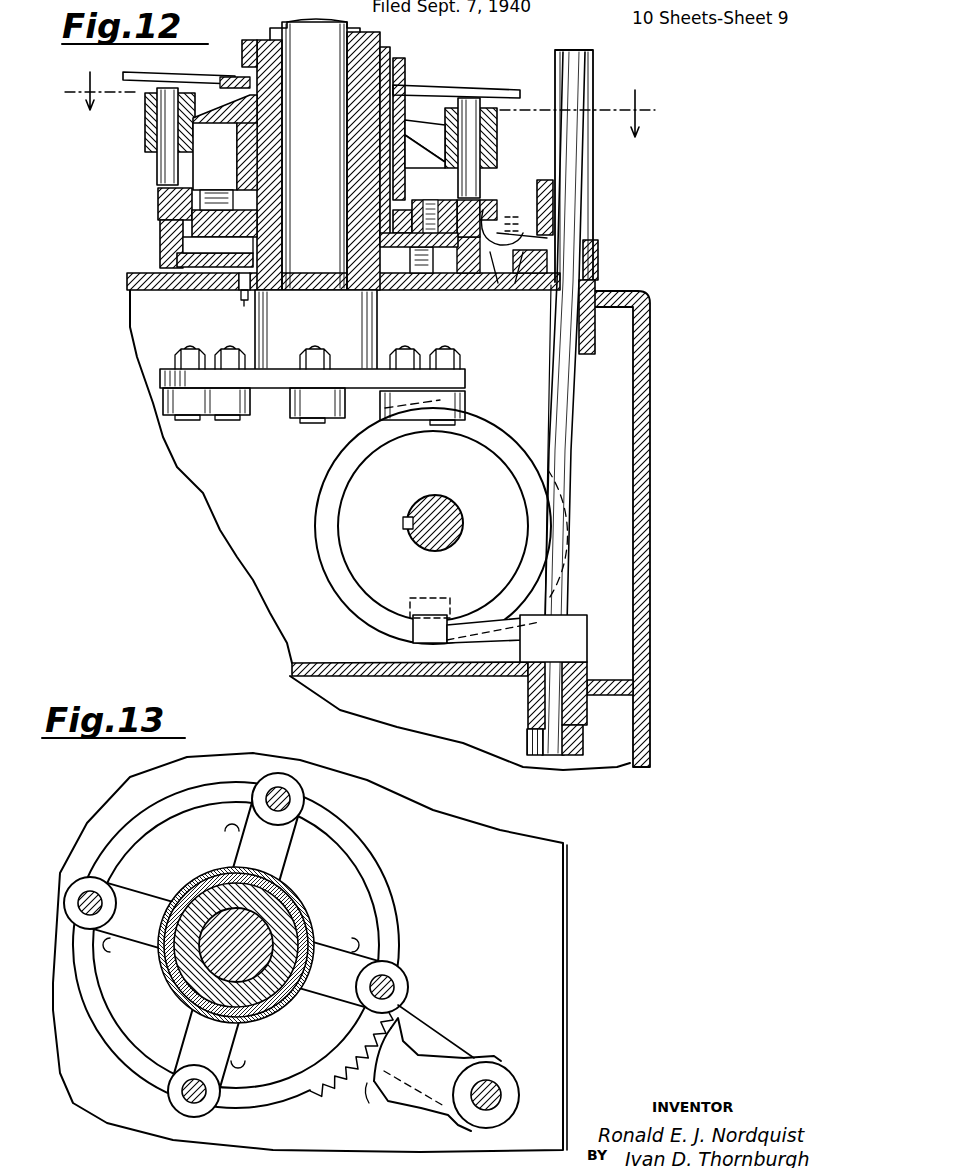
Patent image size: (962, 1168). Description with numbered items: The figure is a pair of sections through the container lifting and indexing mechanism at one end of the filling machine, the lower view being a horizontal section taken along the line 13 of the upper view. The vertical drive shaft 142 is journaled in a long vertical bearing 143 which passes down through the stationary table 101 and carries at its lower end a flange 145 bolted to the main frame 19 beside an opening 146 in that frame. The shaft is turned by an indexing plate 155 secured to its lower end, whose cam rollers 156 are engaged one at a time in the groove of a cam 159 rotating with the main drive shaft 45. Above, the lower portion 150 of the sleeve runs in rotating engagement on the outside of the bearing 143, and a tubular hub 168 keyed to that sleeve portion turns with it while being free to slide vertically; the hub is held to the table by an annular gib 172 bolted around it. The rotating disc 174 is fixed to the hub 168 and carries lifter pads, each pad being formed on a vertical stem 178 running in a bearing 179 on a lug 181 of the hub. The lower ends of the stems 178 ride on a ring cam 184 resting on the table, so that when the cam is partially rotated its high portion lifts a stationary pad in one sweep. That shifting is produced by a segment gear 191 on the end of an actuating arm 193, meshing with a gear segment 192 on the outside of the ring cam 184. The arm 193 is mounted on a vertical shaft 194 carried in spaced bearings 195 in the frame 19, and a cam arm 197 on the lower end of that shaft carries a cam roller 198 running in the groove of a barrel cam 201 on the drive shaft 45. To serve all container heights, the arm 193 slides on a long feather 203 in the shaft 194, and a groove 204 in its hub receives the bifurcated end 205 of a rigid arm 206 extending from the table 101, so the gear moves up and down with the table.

In FIG. 12, the short shaft 13 is at (360, 126).
In FIG. 12, the main frame 19 is at (636, 691).
In FIG. 13, the main frame 19 is at (542, 921).
In FIG. 12, the main drive shaft 45 is at (439, 503).
In FIG. 12, the stationary table 101 is at (466, 292).
In FIG. 12, the vertical drive shaft 142 is at (314, 156).
In FIG. 13, the vertical drive shaft 142 is at (258, 923).
In FIG. 12, the vertical bearing 143 is at (268, 180).
In FIG. 13, the vertical bearing 143 is at (195, 900).
In FIG. 12, the flange 145 is at (187, 291).
In FIG. 12, the opening 146 is at (243, 300).
In FIG. 12, the lower portion of the sleeve 150 is at (262, 100).
In FIG. 13, the lower portion of the sleeve 150 is at (218, 880).
In FIG. 12, the indexing plate 155 is at (258, 380).
In FIG. 12, the cam rollers 156 is at (185, 405).
In FIG. 12, the cam 159 is at (338, 572).
In FIG. 12, the tubular hub 168 is at (245, 176).
In FIG. 13, the tubular hub 168 is at (240, 869).
In FIG. 12, the annular gib 172 is at (175, 215).
In FIG. 13, the annular gib 172 is at (325, 860).
In FIG. 12, the rotating disc 174 is at (250, 75).
In FIG. 12, the vertical stem 178 is at (165, 160).
In FIG. 13, the vertical stem 178 is at (285, 798).
In FIG. 12, the bearing 179 is at (150, 122).
In FIG. 13, the bearing 179 is at (265, 785).
In FIG. 12, the lug 181 is at (252, 118).
In FIG. 13, the lug 181 is at (235, 944).
In FIG. 12, the ring cam 184 is at (165, 197).
In FIG. 13, the ring cam 184 is at (333, 830).
In FIG. 12, the segment gear 191 is at (497, 236).
In FIG. 13, the segment gear 191 is at (366, 1107).
In FIG. 12, the gear segment 192 is at (524, 206).
In FIG. 13, the gear segment 192 is at (338, 1082).
In FIG. 12, the actuating arm 193 is at (527, 223).
In FIG. 13, the actuating arm 193 is at (440, 1063).
In FIG. 12, the vertical shaft 194 is at (556, 424).
In FIG. 13, the vertical shaft 194 is at (490, 1092).
In FIG. 12, the bearings 195 is at (598, 353).
In FIG. 12, the cam arm 197 is at (510, 640).
In FIG. 12, the cam roller 198 is at (432, 598).
In FIG. 12, the barrel cam 201 is at (357, 521).
In FIG. 12, the feather 203 is at (596, 70).
In FIG. 12, the groove 204 is at (610, 262).
In FIG. 13, the bifurcated end 205 is at (500, 1070).
In FIG. 12, the rigid arm 206 is at (513, 292).
In FIG. 13, the rigid arm 206 is at (415, 1033).